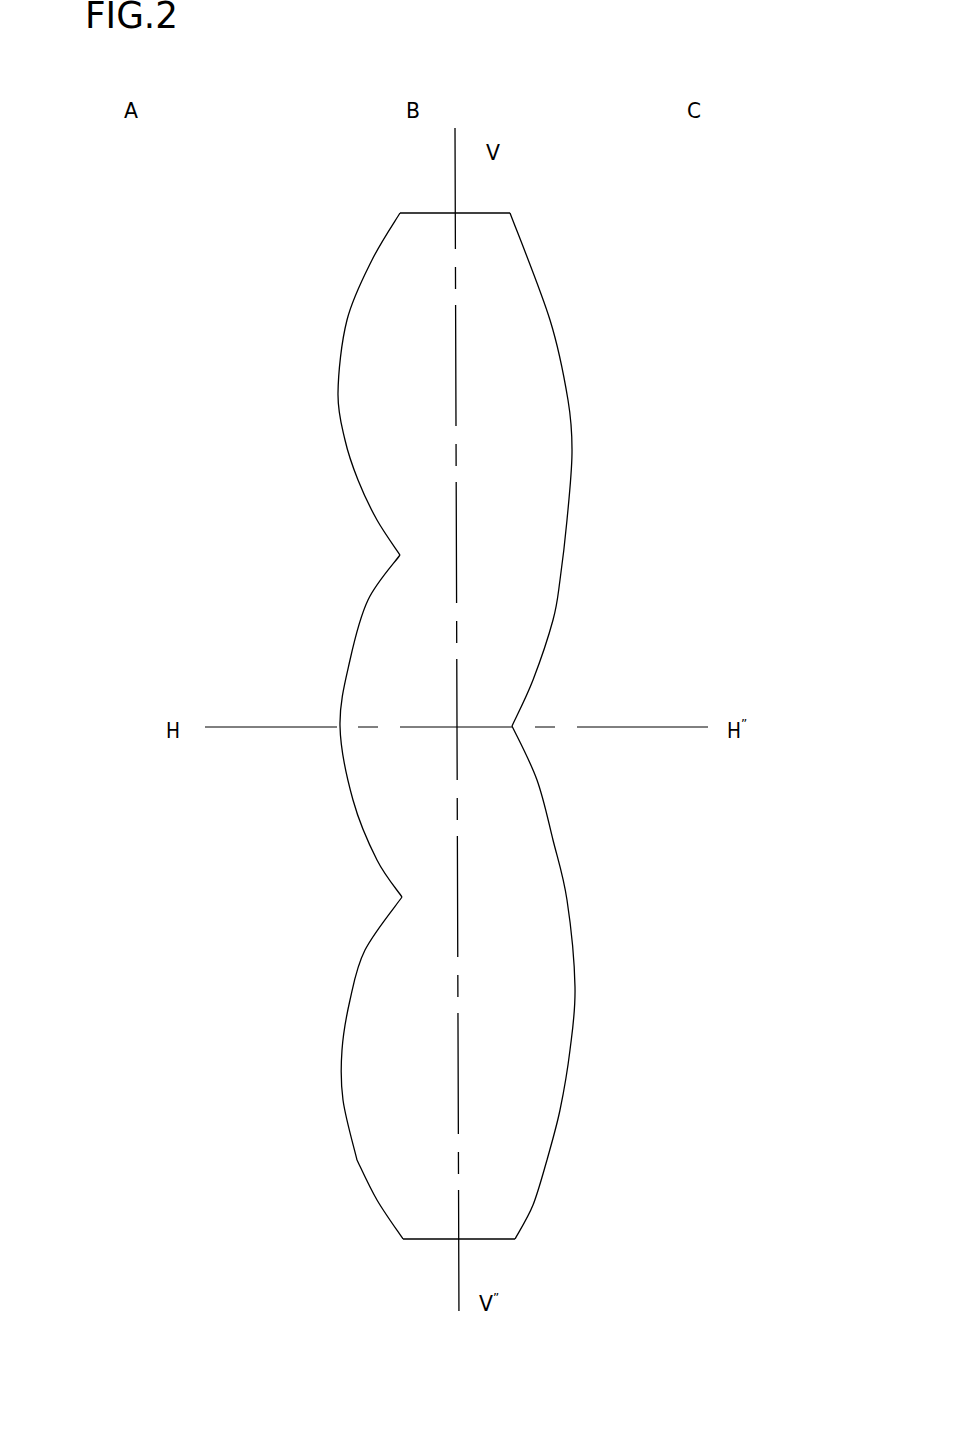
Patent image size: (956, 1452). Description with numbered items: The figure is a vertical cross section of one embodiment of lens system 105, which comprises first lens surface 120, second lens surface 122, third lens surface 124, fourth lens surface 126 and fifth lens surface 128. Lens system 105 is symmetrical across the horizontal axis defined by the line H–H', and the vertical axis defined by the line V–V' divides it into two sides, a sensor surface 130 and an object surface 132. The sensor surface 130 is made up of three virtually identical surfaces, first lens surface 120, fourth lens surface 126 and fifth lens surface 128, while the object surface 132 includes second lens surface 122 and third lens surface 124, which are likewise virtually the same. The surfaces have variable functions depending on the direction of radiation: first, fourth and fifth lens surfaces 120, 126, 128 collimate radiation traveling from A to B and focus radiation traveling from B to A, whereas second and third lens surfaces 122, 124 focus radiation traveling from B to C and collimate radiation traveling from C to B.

The lens system 105 is at (490, 212).
The first lens surface 120 is at (332, 745).
The second lens surface 122 is at (589, 426).
The third lens surface 124 is at (580, 983).
The fourth lens surface 126 is at (333, 397).
The fifth lens surface 128 is at (333, 1072).
The sensor surface 130 is at (367, 1217).
The object surface 132 is at (547, 1209).